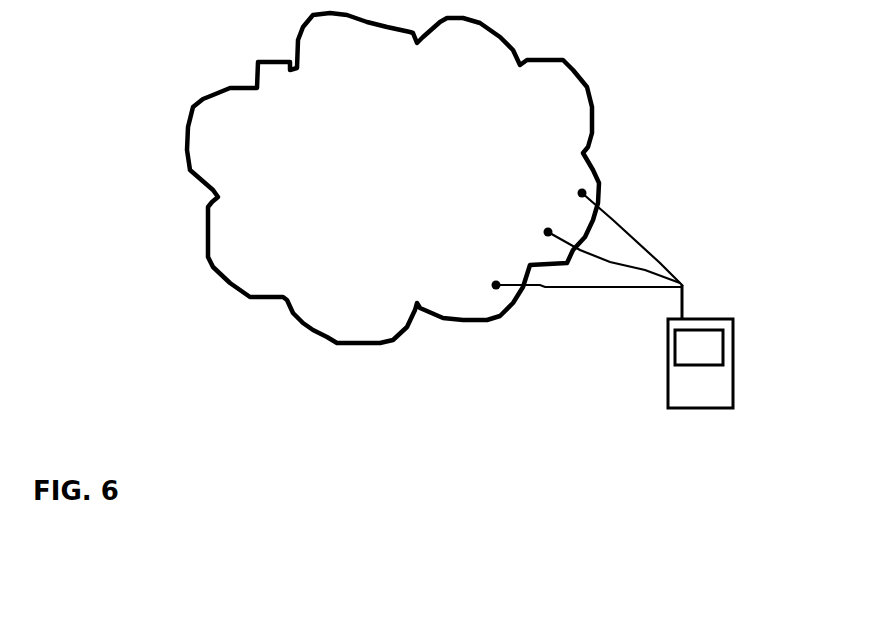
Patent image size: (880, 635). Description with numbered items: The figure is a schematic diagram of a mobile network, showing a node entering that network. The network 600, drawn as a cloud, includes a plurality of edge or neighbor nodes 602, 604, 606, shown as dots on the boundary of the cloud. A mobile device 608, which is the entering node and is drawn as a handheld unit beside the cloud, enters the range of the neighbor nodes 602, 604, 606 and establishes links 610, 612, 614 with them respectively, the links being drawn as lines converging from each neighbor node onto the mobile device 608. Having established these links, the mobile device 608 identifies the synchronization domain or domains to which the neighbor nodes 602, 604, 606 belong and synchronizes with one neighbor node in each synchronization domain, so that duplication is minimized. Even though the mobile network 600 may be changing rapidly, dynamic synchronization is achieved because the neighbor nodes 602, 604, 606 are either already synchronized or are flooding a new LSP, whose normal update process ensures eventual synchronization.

The mobile network 600 is at (393, 178).
The neighbor node 602 is at (540, 167).
The neighbor node 604 is at (504, 217).
The neighbor node 606 is at (454, 271).
The mobile device 608 is at (737, 382).
The link 610 is at (712, 200).
The link 612 is at (652, 253).
The link 614 is at (621, 287).